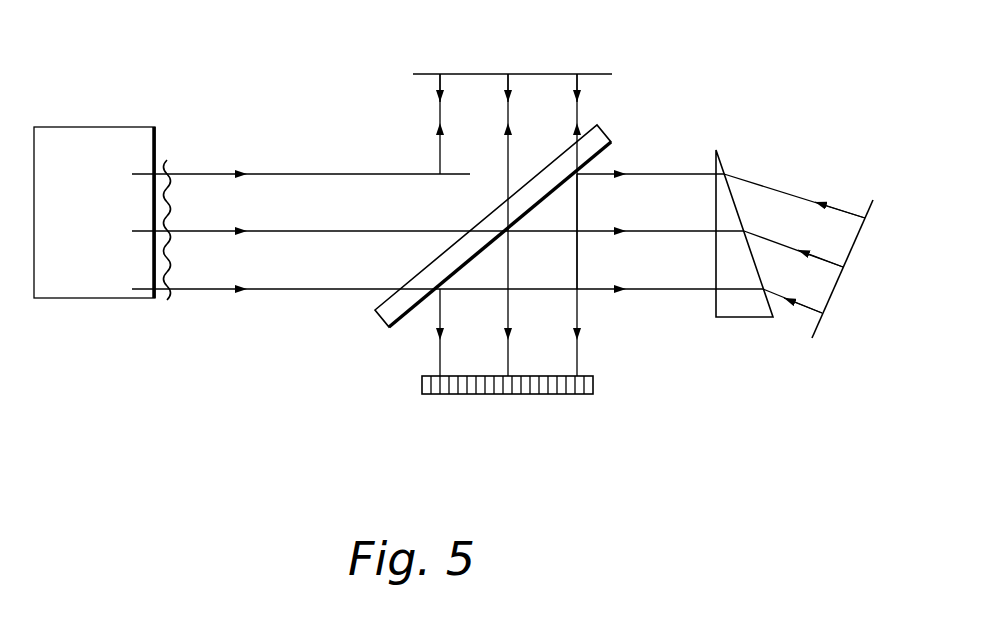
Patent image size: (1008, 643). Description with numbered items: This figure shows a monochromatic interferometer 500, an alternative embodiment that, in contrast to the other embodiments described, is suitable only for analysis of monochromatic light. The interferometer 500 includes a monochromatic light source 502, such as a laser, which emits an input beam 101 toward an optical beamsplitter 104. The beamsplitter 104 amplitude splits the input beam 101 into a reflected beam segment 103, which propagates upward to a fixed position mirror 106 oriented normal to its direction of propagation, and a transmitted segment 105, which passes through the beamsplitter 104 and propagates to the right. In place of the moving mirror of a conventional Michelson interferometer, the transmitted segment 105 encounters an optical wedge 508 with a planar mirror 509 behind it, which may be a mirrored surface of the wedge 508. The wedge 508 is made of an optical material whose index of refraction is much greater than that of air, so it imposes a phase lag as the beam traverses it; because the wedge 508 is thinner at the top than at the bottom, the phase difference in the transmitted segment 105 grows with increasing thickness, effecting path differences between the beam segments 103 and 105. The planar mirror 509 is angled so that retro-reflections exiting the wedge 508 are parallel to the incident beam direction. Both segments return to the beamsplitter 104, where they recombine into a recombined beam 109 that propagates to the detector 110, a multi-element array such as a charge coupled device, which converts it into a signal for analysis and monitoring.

The interferometer 500 is at (300, 102).
The monochromatic light source 502 is at (90, 127).
The input beam 101 is at (282, 300).
The reflected beam segment 103 is at (430, 146).
The fixed position mirror 106 is at (423, 77).
The beamsplitter 104 is at (608, 138).
The transmitted segment 105 is at (690, 300).
The optical wedge 508 is at (723, 162).
The planar mirror 509 is at (860, 237).
The recombined beam 109 is at (590, 351).
The detector 110 is at (443, 413).